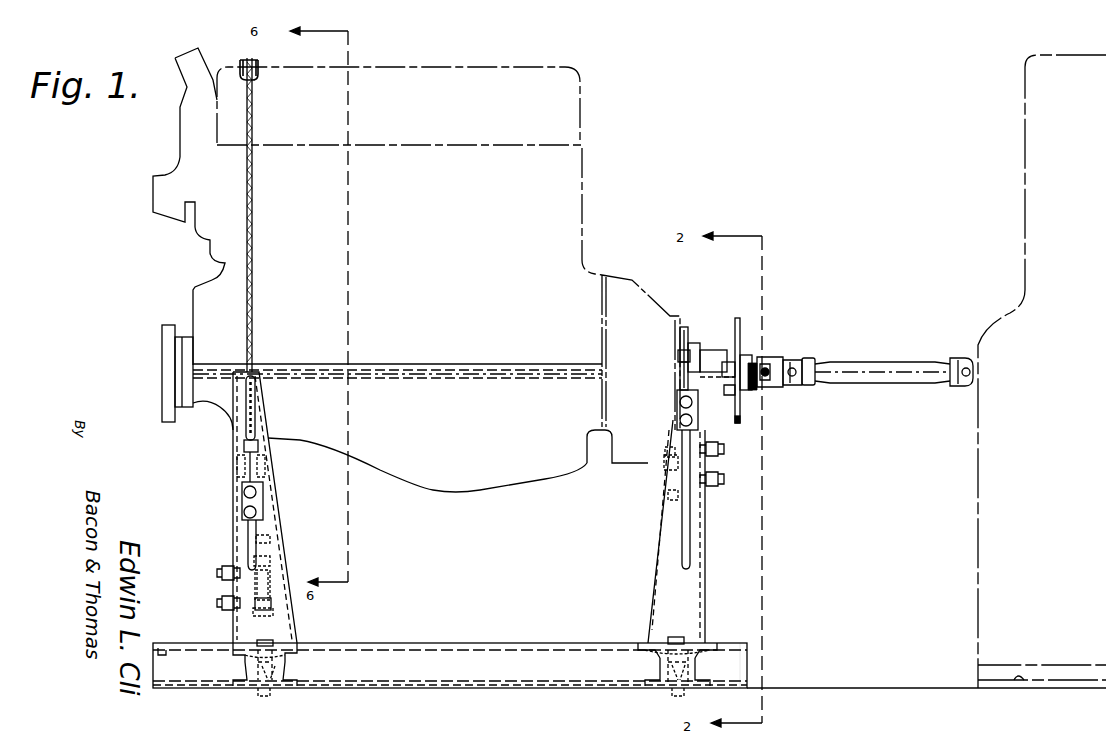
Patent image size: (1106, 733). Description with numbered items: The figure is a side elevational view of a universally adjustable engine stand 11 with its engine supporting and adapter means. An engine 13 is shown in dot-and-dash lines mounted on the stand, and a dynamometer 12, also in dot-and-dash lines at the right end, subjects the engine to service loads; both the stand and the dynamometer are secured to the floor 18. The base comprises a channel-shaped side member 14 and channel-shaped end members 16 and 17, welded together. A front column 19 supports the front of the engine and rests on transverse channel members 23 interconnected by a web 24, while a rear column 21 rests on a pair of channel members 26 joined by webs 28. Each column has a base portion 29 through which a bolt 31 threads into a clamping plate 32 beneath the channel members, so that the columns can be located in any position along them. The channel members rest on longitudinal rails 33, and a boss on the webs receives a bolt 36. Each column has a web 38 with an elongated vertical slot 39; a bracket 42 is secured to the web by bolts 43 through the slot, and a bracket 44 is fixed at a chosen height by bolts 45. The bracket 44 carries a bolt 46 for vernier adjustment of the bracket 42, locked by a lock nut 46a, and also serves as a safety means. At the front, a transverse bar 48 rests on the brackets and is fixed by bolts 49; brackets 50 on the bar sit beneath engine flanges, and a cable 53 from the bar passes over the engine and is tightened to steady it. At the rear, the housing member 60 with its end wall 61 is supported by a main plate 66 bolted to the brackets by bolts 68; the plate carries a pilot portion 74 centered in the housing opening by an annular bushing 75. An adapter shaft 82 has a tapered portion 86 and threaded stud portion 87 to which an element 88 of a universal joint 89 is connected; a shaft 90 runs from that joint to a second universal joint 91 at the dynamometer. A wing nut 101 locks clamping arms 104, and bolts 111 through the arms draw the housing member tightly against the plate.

The engine stand 11 is at (492, 640).
The dynamometer 12 is at (1033, 127).
The engine 13 is at (548, 72).
The side member 14 is at (410, 643).
The end member 16 is at (157, 643).
The end member 17 is at (742, 642).
The floor 18 is at (857, 688).
The front column 19 is at (280, 546).
The rear column 21 is at (663, 592).
The transverse channel member 23 is at (246, 666).
The web 24 is at (680, 637).
The channel member 26 is at (658, 666).
The web 28 is at (252, 643).
The base portion 29 is at (298, 646).
The bolt 31 is at (275, 640).
The clamping plate 32 is at (282, 692).
The rail 33 is at (412, 692).
The bolt 36 is at (262, 692).
The web 38 is at (285, 500).
The vertical slot 39 is at (249, 540).
The bracket 42 is at (240, 497).
The bolt 43 is at (257, 492).
The bracket 44 is at (275, 582).
The bolt 45 is at (220, 603).
The bolt 46 is at (275, 537).
The lock nut 46a is at (278, 562).
The transverse bar 48 is at (237, 465).
The bolt 49 is at (244, 445).
The bracket 50 is at (262, 405).
The cable 53 is at (253, 278).
The housing member 60 is at (630, 281).
The end wall 61 is at (680, 335).
The main plate 66 is at (686, 328).
The bolt 68 is at (692, 345).
The pilot portion 74 is at (688, 353).
The annular bushing 75 is at (679, 346).
The adapter shaft 82 is at (757, 391).
The tapered portion 86 is at (746, 356).
The threaded stud portion 87 is at (769, 368).
The universal joint element 88 is at (790, 386).
The universal joint 89 is at (809, 358).
The shaft 90 is at (878, 362).
The universal joint 91 is at (965, 389).
The wing nut 101 is at (738, 318).
The clamping arm 104 is at (712, 350).
The bolt 111 is at (728, 391).